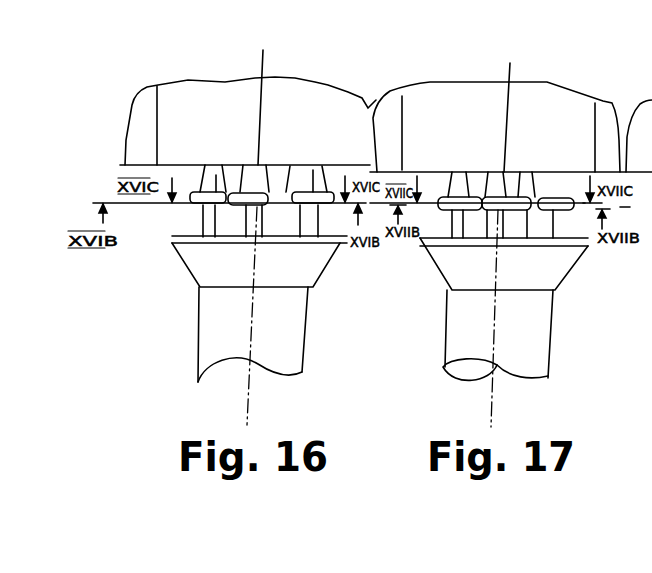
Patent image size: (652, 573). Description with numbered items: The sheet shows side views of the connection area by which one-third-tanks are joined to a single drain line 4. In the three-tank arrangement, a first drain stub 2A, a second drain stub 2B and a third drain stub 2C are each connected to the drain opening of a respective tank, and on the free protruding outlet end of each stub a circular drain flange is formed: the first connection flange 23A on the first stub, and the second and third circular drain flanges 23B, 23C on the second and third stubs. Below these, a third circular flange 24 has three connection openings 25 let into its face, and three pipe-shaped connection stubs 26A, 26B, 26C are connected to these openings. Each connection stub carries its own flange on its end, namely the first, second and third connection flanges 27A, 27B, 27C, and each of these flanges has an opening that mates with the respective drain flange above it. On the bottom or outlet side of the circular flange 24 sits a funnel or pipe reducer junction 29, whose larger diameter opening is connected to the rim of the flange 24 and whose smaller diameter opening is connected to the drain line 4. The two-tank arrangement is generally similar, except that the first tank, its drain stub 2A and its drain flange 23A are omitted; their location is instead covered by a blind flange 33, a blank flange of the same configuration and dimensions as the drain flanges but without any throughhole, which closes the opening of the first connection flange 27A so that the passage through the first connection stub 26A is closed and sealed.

In FIG. 16, the first drain stub 2A is at (305, 180).
In FIG. 16, the second drain stub 2B is at (241, 185).
In FIG. 17, the second drain stub 2B is at (505, 190).
In FIG. 16, the third drain stub 2C is at (222, 182).
In FIG. 17, the third drain stub 2C is at (473, 187).
In FIG. 16, the drain line 4 is at (208, 345).
In FIG. 17, the drain line 4 is at (460, 352).
In FIG. 16, the first connection flange 23A is at (292, 200).
In FIG. 16, the second circular drain flange 23B is at (280, 197).
In FIG. 17, the second circular drain flange 23B is at (515, 197).
In FIG. 16, the third circular drain flange 23C is at (218, 192).
In FIG. 17, the third circular drain flange 23C is at (460, 195).
In FIG. 16, the third circular flange 24 is at (194, 235).
In FIG. 17, the third circular flange 24 is at (553, 223).
In FIG. 16, the connection openings 25 is at (252, 191).
In FIG. 16, the first connection stub 26A is at (304, 211).
In FIG. 17, the first connection stub 26A is at (552, 223).
In FIG. 16, the second connection stub 26B is at (268, 214).
In FIG. 17, the second connection stub 26B is at (460, 220).
In FIG. 16, the third connection stub 26C is at (205, 216).
In FIG. 17, the third connection stub 26C is at (450, 214).
In FIG. 16, the first connection flange 27A is at (305, 213).
In FIG. 16, the second connection flange 27B is at (253, 211).
In FIG. 16, the third connection flange 27C is at (200, 208).
In FIG. 16, the pipe reducer junction 29 is at (287, 273).
In FIG. 17, the pipe reducer junction 29 is at (538, 268).
In FIG. 17, the blind flange 33 is at (570, 233).